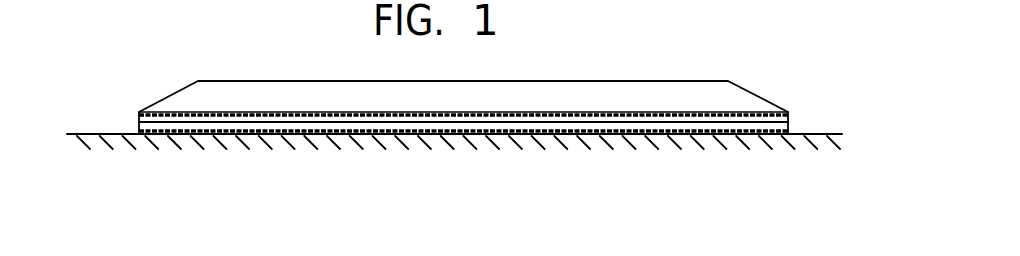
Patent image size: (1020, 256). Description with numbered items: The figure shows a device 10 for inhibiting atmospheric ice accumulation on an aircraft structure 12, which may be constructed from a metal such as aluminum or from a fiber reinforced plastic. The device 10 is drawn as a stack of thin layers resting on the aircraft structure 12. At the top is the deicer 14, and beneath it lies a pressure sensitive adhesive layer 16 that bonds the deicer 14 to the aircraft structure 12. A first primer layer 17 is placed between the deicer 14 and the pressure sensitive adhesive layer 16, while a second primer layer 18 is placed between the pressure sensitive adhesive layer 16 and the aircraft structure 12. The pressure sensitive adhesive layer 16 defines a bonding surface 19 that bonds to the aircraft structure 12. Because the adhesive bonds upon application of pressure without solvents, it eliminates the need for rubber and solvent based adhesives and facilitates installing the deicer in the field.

The device 10 is at (541, 64).
The aircraft structure 12 is at (112, 133).
The deicer 14 is at (651, 79).
The pressure sensitive adhesive layer 16 is at (458, 125).
The first primer layer 17 is at (332, 115).
The second primer layer 18 is at (295, 133).
The bonding surface 19 is at (628, 138).